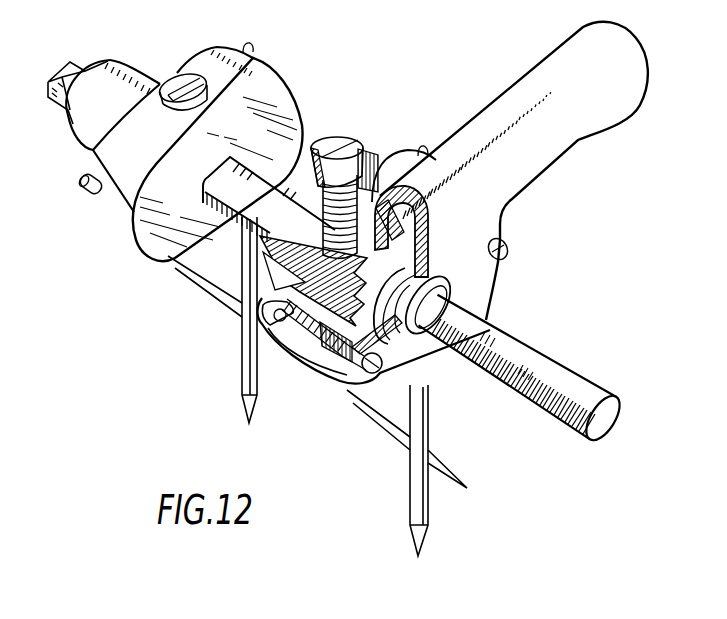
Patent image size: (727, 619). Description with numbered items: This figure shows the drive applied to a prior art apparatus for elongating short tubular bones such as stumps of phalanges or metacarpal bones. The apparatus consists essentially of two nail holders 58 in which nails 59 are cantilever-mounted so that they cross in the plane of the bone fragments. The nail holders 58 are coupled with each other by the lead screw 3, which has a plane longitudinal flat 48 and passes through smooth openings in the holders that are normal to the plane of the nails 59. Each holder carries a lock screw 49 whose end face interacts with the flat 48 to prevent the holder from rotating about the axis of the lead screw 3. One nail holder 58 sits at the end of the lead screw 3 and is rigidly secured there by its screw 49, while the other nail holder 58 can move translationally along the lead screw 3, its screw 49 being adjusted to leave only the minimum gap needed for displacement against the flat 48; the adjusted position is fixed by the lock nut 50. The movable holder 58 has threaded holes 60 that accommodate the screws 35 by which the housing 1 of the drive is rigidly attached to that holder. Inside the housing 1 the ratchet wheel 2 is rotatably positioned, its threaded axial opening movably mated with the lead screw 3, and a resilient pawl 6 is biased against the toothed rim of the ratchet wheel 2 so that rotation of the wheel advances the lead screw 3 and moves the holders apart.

The housing 1 is at (474, 130).
The ratchet wheel 2 is at (387, 258).
The lead screw 3 is at (568, 366).
The pawl 6 is at (388, 200).
The screws 35 is at (340, 372).
The longitudinal flat 48 is at (510, 347).
The lock screw 49 is at (178, 75).
The lock nut 50 is at (318, 138).
The nail holders 58 is at (108, 202).
The nails 59 is at (236, 259).
The threaded holes 60 is at (263, 303).